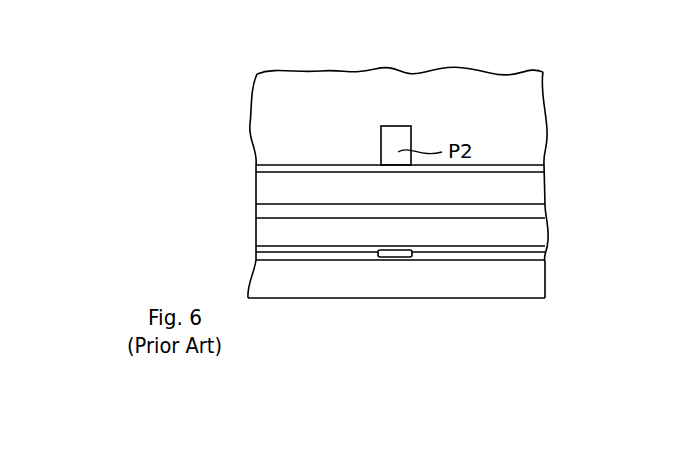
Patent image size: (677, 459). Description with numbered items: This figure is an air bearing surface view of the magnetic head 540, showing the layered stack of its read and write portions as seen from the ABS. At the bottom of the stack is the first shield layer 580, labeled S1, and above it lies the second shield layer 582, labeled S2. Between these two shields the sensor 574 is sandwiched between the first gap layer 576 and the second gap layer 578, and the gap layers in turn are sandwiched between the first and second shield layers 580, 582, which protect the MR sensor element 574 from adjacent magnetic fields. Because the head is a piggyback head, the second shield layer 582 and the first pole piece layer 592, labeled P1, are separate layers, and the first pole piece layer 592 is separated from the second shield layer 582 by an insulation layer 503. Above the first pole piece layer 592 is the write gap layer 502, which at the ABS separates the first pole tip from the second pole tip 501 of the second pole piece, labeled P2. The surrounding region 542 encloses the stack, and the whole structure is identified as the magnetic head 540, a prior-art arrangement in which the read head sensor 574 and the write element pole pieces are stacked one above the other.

The magnetic head 540 is at (566, 86).
The dielectric layer 542 is at (265, 101).
The second pole tip 501 is at (393, 137).
The write gap layer 502 is at (322, 167).
The first pole piece layer 592 is at (262, 190).
The insulation layer 503 is at (538, 212).
The second shield layer 582 is at (260, 234).
The first shield layer 580 is at (535, 282).
The first gap layer 576 is at (317, 261).
The sensor 574 is at (393, 258).
The second gap layer 578 is at (508, 248).